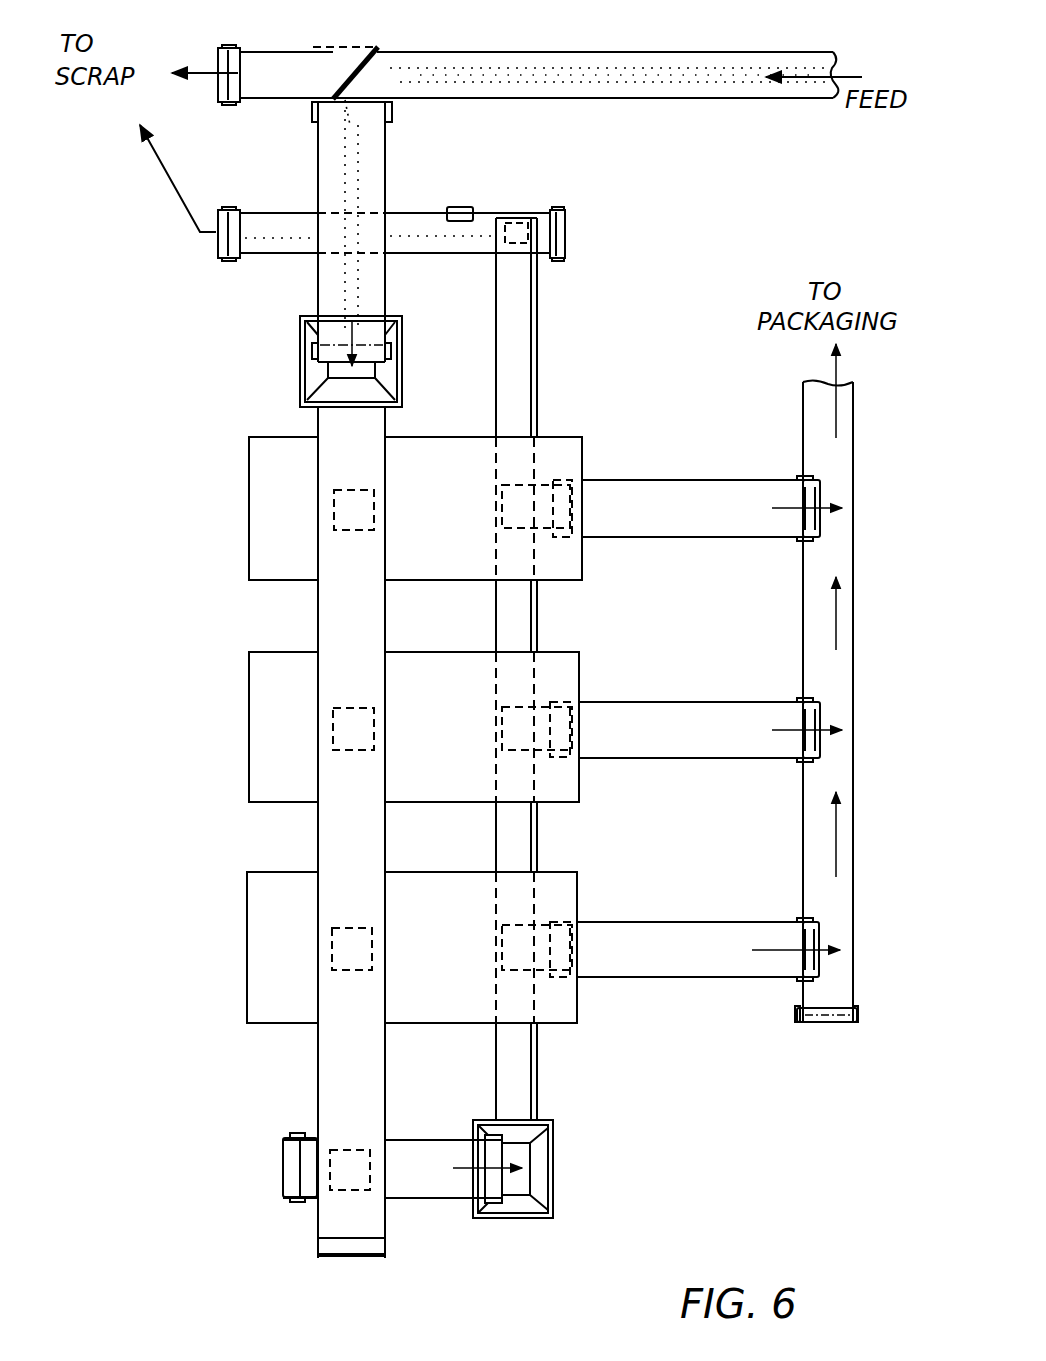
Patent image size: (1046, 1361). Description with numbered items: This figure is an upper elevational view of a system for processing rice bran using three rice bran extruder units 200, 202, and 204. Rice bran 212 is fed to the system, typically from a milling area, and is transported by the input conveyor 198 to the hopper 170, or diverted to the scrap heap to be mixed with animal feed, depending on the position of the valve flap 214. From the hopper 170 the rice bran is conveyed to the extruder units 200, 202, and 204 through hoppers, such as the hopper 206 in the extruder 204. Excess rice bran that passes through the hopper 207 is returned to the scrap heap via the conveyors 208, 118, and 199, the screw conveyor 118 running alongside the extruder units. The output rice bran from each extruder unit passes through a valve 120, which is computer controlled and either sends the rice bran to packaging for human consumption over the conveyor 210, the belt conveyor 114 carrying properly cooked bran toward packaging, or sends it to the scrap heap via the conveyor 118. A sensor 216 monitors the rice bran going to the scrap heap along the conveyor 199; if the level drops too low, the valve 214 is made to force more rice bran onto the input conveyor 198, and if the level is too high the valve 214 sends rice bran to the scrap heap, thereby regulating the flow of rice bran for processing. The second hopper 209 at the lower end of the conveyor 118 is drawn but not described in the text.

The belt conveyor 114 is at (692, 965).
The screw conveyor 118 is at (530, 325).
The valve 120 is at (522, 520).
The hopper 170 is at (315, 373).
The conveyor 198 is at (330, 170).
The conveyor 199 is at (457, 245).
The rice bran extruder unit 200 is at (262, 510).
The rice bran extruder unit 202 is at (258, 735).
The rice bran extruder unit 204 is at (257, 942).
The hopper 206 is at (345, 955).
The hopper 207 is at (342, 1178).
The conveyor 208 is at (442, 1188).
The hopper 209 is at (522, 1205).
The conveyor 210 is at (828, 1010).
The rice bran 212 is at (646, 90).
The valve flap 214 is at (343, 88).
The sensor 216 is at (460, 205).